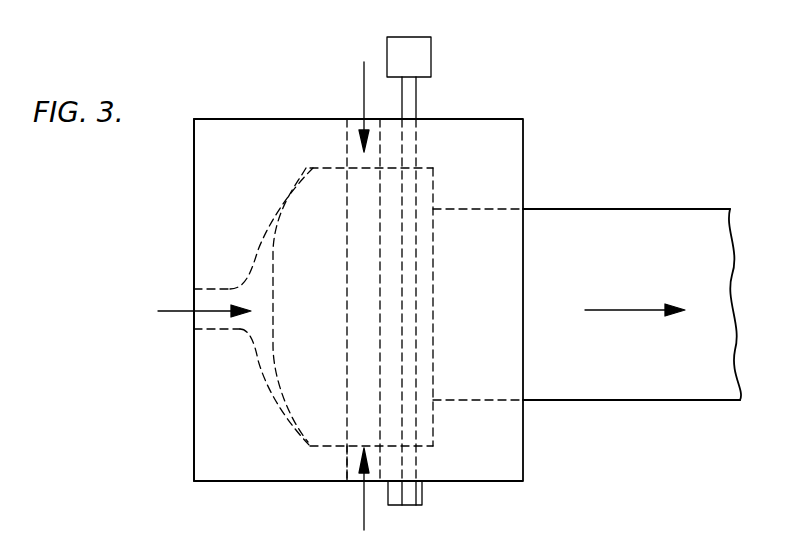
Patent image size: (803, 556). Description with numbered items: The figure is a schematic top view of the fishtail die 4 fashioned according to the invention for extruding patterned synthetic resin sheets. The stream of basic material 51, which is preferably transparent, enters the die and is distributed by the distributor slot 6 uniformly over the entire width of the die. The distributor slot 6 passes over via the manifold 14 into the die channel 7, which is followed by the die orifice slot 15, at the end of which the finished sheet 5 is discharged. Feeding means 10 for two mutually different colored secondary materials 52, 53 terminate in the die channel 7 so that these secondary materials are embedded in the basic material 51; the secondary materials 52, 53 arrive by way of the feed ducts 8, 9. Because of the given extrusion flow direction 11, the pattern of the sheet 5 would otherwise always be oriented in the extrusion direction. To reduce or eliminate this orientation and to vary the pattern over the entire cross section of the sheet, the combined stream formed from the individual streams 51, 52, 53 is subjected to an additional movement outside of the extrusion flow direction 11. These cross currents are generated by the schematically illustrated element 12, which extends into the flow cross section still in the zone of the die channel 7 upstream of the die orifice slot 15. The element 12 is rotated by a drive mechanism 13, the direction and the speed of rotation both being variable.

The fishtail die 4 is at (505, 119).
The sheet 5 is at (573, 227).
The distributor slot 6 is at (211, 204).
The die channel 7 is at (346, 370).
The feed duct 8 is at (346, 463).
The feed duct 9 is at (347, 135).
The feeding means 10 is at (362, 417).
The extrusion flow direction 11 is at (627, 310).
The element 12 is at (410, 187).
The drive mechanism 13 is at (413, 37).
The manifold 14 is at (313, 167).
The die orifice slot 15 is at (502, 204).
The basic material 51 is at (177, 312).
The colored secondary material 52 is at (364, 515).
The colored secondary material 53 is at (364, 80).